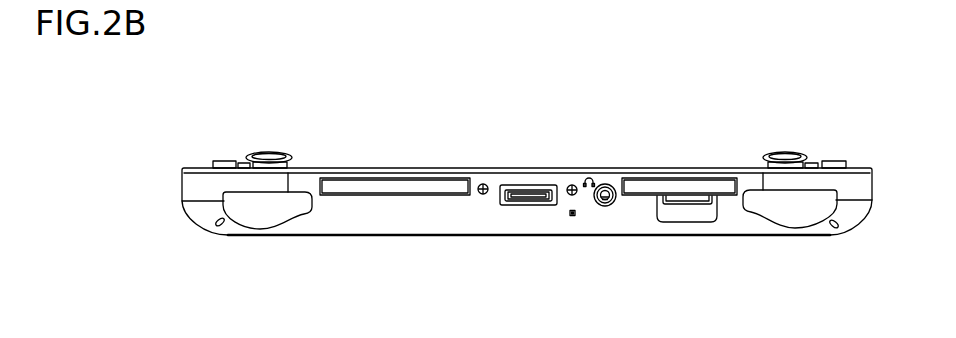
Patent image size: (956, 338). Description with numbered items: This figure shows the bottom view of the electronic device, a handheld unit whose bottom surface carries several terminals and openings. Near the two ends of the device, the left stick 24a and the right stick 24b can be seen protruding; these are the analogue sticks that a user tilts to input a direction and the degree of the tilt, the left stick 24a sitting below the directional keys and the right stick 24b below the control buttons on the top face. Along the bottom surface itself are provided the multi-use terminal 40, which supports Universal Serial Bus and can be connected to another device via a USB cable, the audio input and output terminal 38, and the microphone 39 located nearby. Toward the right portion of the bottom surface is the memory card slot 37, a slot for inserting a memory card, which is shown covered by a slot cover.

The left stick 24a is at (267, 152).
The right stick 24b is at (786, 152).
The multi-use terminal 40 is at (528, 185).
The audio input and output terminal 38 is at (606, 184).
The microphone 39 is at (573, 218).
The memory card slot 37 is at (687, 213).